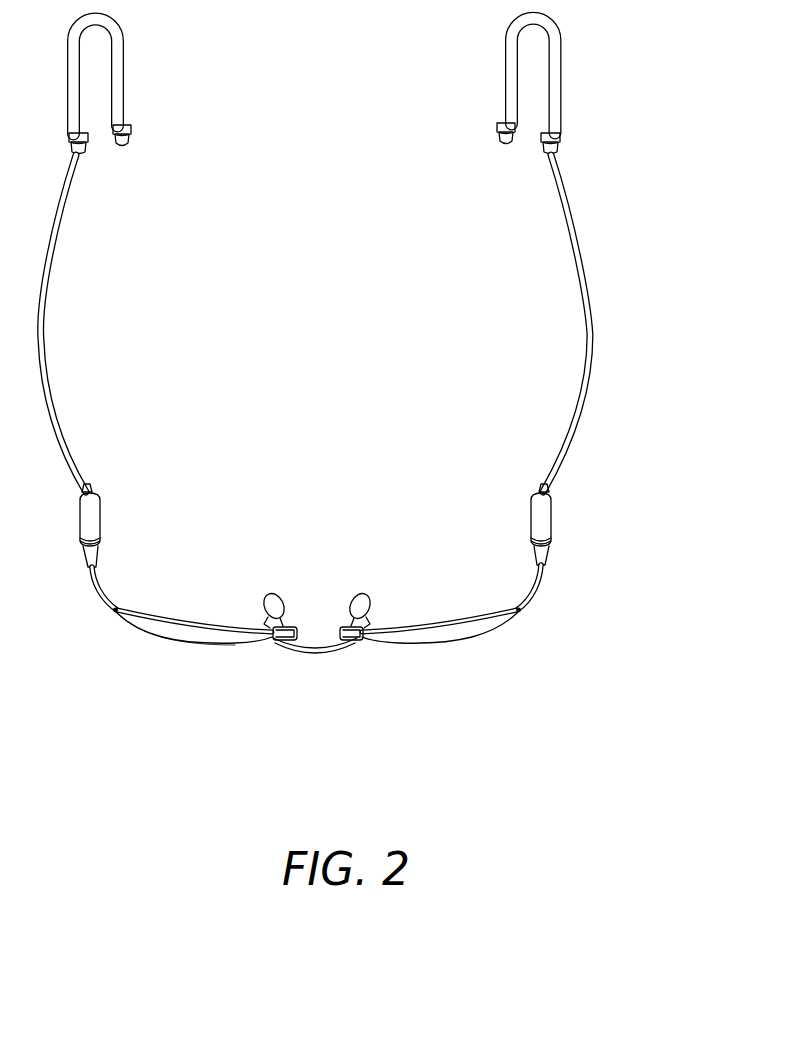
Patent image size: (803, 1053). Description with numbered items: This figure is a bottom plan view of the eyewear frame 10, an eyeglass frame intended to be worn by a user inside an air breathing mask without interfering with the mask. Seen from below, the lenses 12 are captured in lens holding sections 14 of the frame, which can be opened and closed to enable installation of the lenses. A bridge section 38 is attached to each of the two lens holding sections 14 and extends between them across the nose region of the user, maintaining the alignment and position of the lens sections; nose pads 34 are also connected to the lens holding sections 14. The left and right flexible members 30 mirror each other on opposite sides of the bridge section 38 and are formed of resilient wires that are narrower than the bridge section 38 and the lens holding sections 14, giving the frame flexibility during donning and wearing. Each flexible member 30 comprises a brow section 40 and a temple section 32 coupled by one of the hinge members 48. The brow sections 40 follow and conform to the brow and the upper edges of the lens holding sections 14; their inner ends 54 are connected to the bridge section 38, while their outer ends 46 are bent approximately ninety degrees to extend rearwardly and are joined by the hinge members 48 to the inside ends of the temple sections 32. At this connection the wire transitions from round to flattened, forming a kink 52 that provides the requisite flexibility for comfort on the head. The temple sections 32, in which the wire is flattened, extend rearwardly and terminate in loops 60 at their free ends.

The eyewear frame 10 is at (322, 570).
The lenses 12 is at (157, 637).
The lens holding sections 14 is at (110, 610).
The flexible members 30 is at (585, 298).
The temple sections 32 is at (50, 278).
The nose pads 34 is at (277, 598).
The bridge section 38 is at (303, 650).
The brow sections 40 is at (185, 615).
The outer ends 46 is at (98, 582).
The hinge members 48 is at (102, 530).
The kink 52 is at (95, 483).
The inner ends 54 is at (337, 622).
The ear loop 60 is at (118, 57).